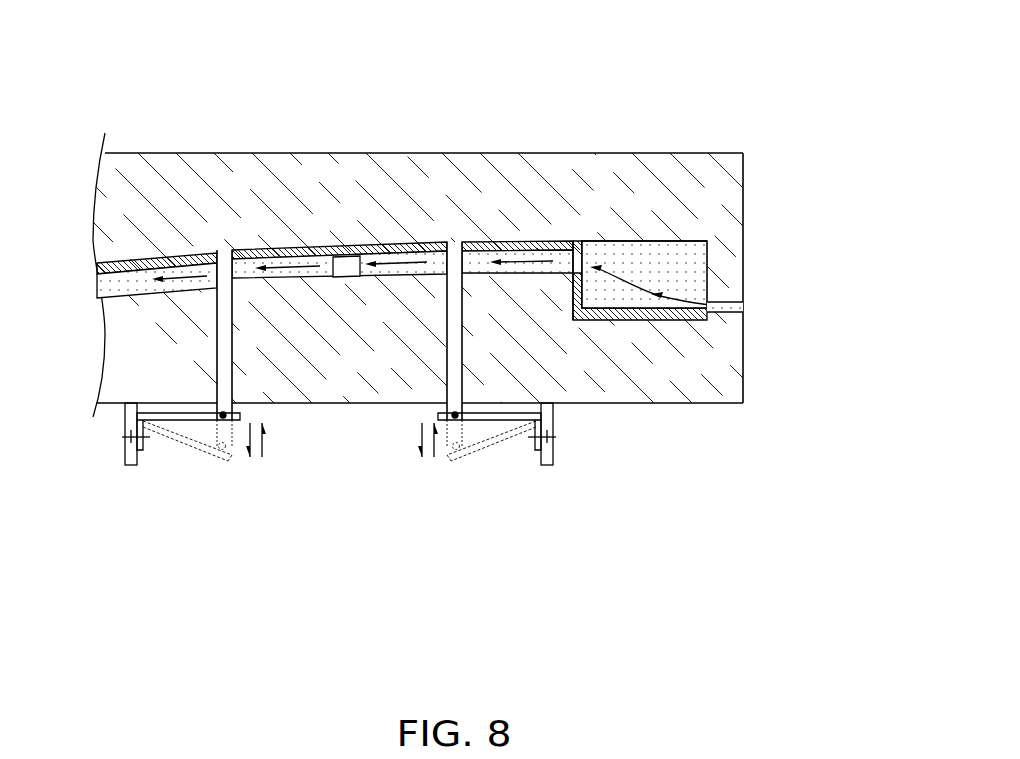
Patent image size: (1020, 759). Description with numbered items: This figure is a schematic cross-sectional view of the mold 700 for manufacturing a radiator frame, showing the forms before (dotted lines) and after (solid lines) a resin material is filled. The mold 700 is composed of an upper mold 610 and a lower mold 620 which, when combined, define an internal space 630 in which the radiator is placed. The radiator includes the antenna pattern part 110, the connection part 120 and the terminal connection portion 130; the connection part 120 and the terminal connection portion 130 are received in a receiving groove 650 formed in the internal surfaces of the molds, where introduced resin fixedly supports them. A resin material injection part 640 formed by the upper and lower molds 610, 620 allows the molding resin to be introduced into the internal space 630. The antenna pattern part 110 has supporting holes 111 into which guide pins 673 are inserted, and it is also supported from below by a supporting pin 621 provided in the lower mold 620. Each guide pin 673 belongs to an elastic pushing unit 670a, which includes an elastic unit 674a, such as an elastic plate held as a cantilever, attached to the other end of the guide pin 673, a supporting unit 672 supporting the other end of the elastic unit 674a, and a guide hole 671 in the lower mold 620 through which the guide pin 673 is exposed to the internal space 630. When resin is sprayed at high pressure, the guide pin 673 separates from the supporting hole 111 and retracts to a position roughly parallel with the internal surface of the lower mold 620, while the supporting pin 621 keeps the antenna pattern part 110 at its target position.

The mold for manufacturing the radiator frame 700 is at (685, 50).
The upper mold 610 is at (522, 175).
The lower mold 620 is at (735, 357).
The internal space 630 is at (182, 266).
The antenna pattern part 110 is at (298, 247).
The supporting holes 111 is at (217, 250).
The supporting pin 621 is at (347, 267).
The connection part 120 is at (575, 288).
The terminal connection portion 130 is at (663, 320).
The resin material injection part 640 is at (744, 306).
The receiving groove 650 is at (577, 302).
The elastic pushing unit 670a is at (338, 478).
The guide hole 671 is at (234, 318).
The supporting unit 672 is at (125, 447).
The guide pin 673 is at (225, 342).
The elastic unit 674a is at (339, 503).